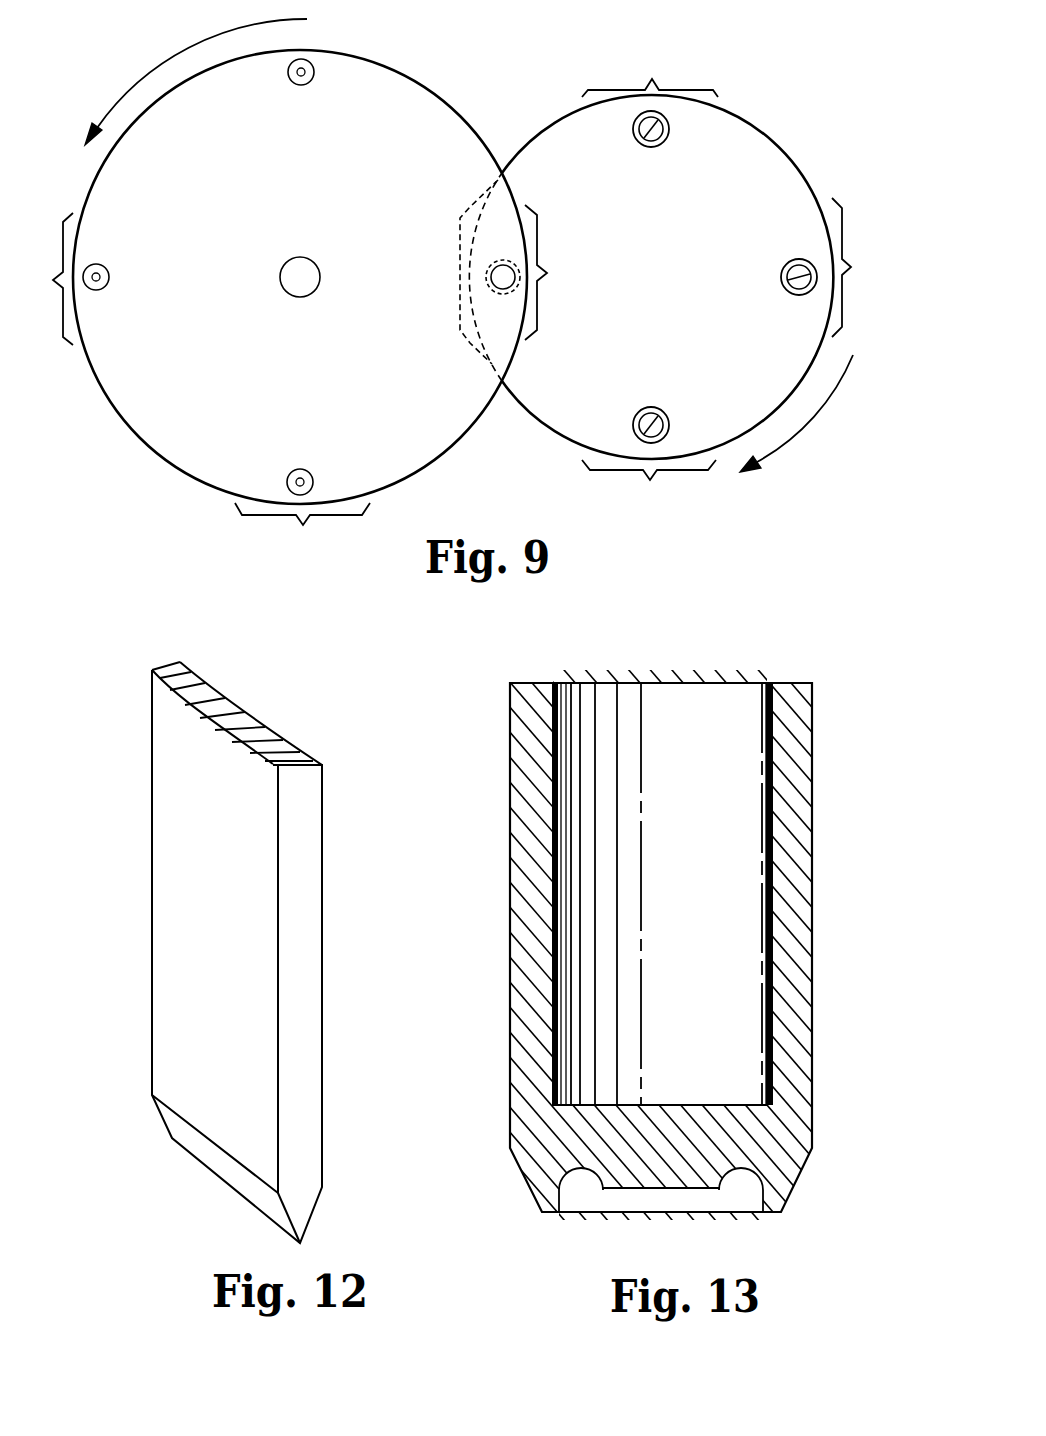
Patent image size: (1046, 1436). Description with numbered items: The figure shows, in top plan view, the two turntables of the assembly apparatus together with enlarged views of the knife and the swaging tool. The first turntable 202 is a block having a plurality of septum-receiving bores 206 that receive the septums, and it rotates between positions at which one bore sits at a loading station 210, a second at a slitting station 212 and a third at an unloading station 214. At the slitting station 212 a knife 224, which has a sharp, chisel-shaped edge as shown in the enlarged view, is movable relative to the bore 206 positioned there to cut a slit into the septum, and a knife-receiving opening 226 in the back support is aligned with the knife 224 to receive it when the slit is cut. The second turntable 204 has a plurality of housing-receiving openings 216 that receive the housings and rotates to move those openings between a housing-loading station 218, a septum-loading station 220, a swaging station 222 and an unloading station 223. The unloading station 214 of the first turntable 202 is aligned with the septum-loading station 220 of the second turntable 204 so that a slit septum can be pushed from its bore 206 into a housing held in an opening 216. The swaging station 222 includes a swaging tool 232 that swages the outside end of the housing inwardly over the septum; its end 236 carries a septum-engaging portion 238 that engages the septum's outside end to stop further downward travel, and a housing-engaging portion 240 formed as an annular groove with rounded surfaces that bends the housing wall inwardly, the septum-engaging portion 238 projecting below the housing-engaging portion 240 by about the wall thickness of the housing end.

In FIG. 9, the first turntable 202 is at (136, 455).
In FIG. 9, the second turntable 204 is at (804, 151).
In FIG. 9, the septum-receiving bore 206 is at (315, 72).
In FIG. 9, the loading station 210 is at (41, 279).
In FIG. 9, the slitting station 212 is at (302, 527).
In FIG. 9, the unloading station 214 is at (560, 272).
In FIG. 9, the housing-receiving opening 216 is at (651, 148).
In FIG. 9, the housing-loading station 218 is at (649, 484).
In FIG. 9, the septum-loading station 220 is at (460, 265).
In FIG. 9, the swaging station 222 is at (650, 74).
In FIG. 9, the unloading station 223 is at (864, 267).
In FIG. 12, the knife 224 is at (187, 968).
In FIG. 9, the knife-receiving opening 226 is at (301, 468).
In FIG. 13, the swaging tool 232 is at (831, 958).
In FIG. 13, the end of the swaging tool 236 is at (542, 1214).
In FIG. 13, the septum-engaging portion 238 is at (643, 1190).
In FIG. 13, the housing-engaging portion 240 is at (733, 1212).